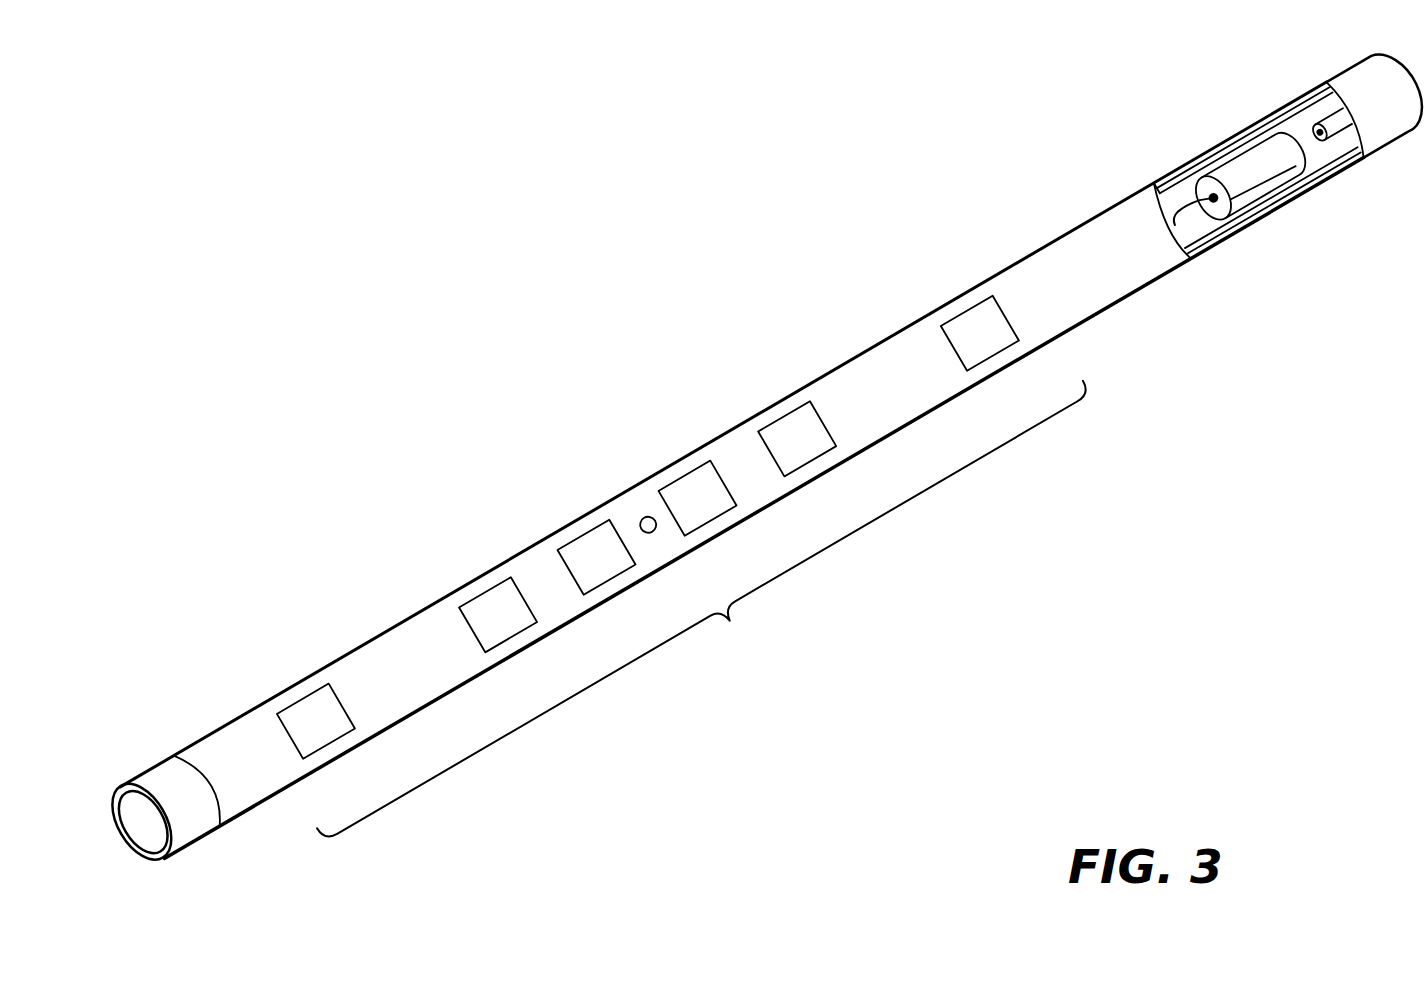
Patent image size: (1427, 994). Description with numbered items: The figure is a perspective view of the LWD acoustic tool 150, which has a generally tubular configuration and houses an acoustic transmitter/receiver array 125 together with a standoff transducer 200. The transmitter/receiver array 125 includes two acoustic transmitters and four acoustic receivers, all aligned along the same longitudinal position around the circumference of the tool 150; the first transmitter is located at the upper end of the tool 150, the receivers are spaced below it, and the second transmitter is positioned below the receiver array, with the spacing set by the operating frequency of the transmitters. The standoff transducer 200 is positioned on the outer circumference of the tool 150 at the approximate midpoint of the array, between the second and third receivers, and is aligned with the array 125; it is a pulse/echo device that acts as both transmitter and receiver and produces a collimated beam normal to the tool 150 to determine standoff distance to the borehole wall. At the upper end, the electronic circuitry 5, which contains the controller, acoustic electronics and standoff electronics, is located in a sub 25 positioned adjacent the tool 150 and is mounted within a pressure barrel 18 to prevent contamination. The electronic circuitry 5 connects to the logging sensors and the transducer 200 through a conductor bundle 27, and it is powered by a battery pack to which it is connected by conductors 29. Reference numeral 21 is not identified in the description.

The LWD acoustic tool 150 is at (430, 402).
The acoustic transmitter/receiver array 125 is at (707, 617).
The standoff transducer 200 is at (643, 517).
The pressure barrel 18 is at (1176, 180).
The electronic circuitry 5 is at (1246, 158).
The recess end wall 21 is at (1327, 118).
The sub 25 is at (1357, 161).
The conductors 29 is at (1316, 144).
The conductor bundle 27 is at (1190, 219).